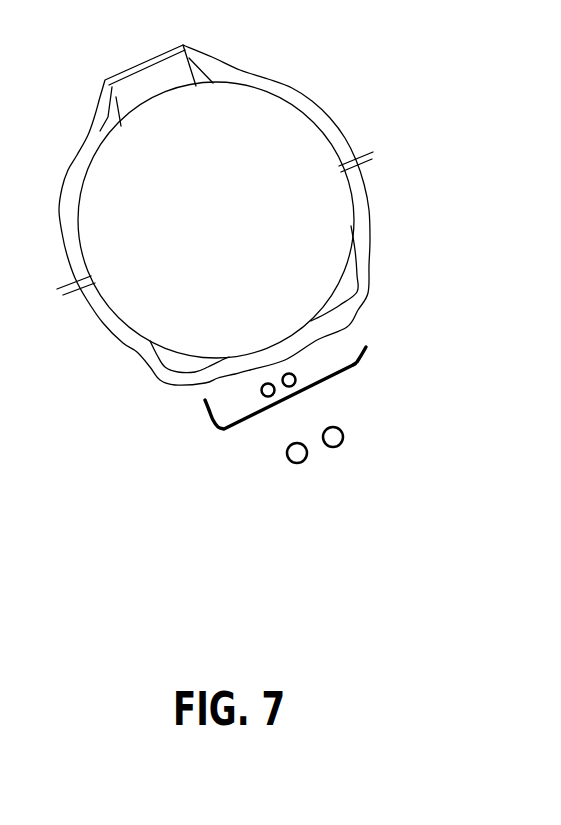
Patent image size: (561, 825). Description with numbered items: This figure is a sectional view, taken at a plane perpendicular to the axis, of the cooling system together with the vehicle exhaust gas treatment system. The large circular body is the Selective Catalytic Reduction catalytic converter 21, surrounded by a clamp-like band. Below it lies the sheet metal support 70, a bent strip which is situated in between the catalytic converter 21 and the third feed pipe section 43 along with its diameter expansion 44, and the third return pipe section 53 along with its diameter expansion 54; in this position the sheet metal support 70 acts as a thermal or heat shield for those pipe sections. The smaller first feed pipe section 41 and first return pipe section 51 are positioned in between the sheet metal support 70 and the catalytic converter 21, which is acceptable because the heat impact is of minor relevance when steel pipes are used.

The Selective Catalytic Reduction catalytic converter 21 is at (237, 188).
The first feed pipe section 41 is at (252, 418).
The sheet metal support 70 is at (358, 361).
The first return pipe section 51 is at (297, 374).
The third feed pipe section 43 is at (291, 499).
The diameter expansion 44 is at (298, 464).
The third return pipe section 53 is at (401, 447).
The diameter expansion 54 is at (343, 436).